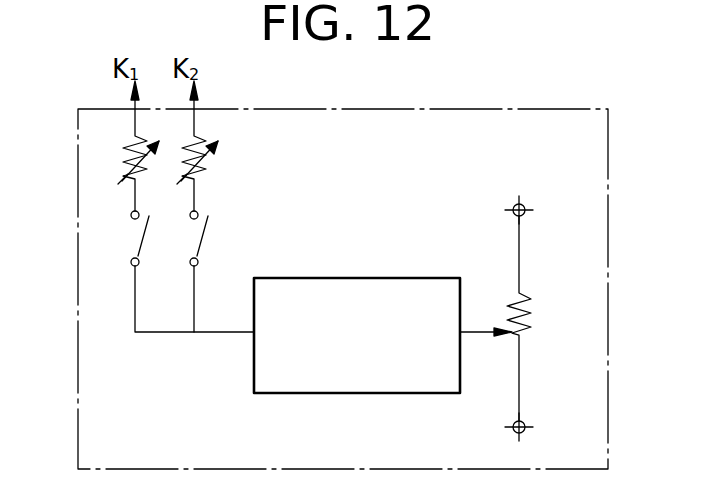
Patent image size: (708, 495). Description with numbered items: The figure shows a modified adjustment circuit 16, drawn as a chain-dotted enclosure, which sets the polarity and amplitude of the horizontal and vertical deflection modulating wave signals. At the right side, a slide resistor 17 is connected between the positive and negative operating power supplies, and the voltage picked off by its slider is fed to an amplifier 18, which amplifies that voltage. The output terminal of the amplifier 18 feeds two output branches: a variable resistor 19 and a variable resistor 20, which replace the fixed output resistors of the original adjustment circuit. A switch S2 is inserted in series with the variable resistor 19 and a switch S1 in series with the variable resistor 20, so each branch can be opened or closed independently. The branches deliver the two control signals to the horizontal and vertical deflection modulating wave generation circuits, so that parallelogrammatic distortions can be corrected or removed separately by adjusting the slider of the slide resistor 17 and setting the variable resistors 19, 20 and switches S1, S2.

The adjustment circuit 16 is at (608, 331).
The variable resistor 19 is at (122, 164).
The variable resistor 20 is at (212, 158).
The amplifier 18 is at (365, 295).
The slide resistor 17 is at (527, 326).
The switch S1 is at (210, 230).
The switch S2 is at (130, 242).